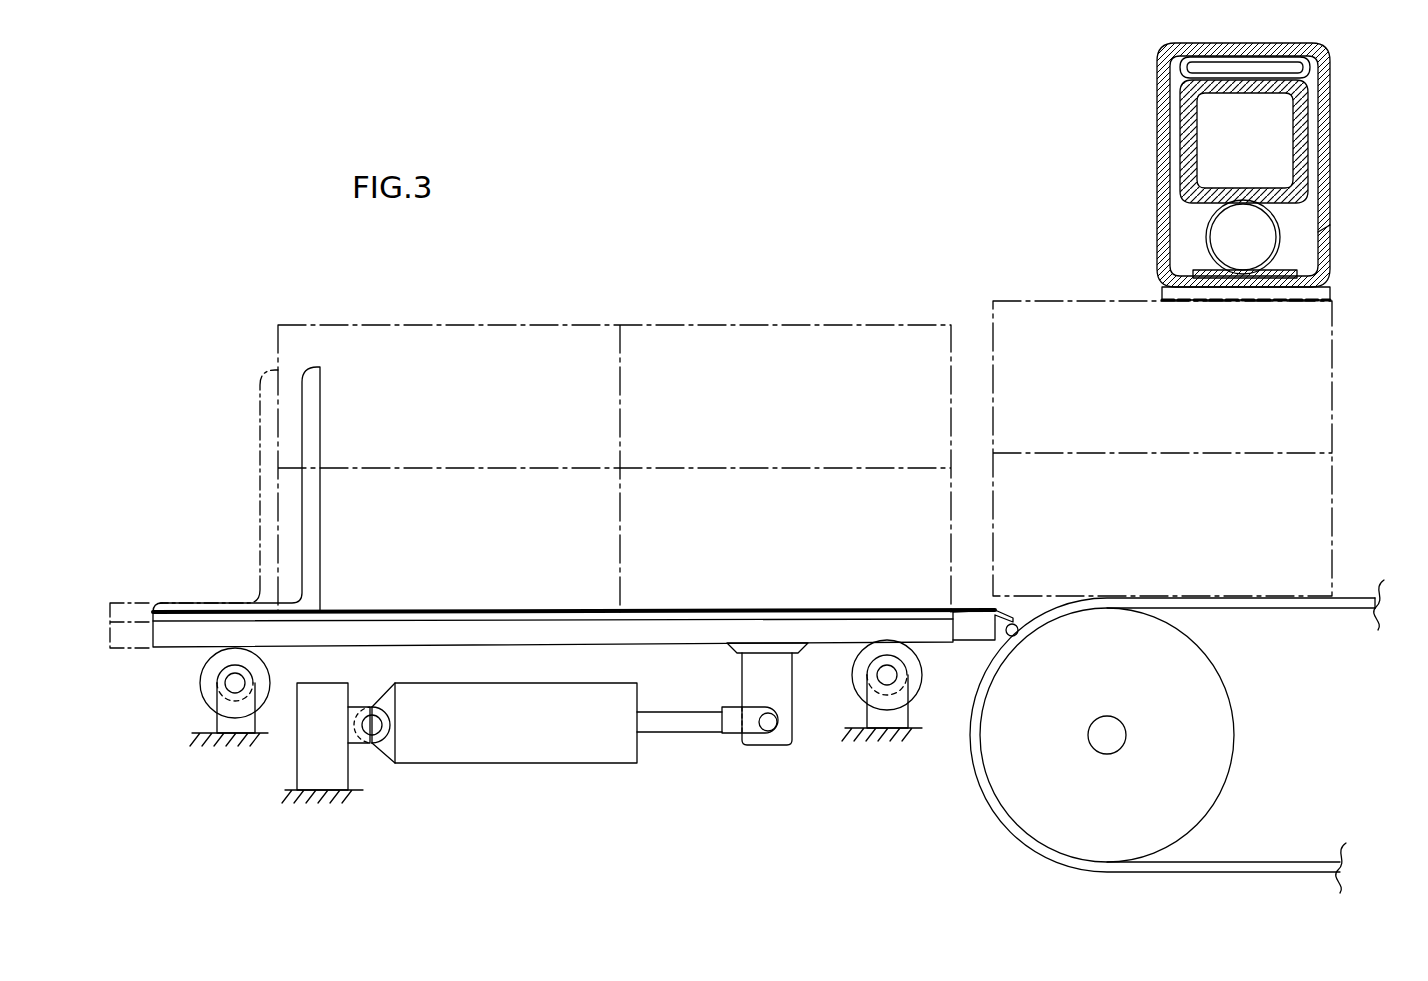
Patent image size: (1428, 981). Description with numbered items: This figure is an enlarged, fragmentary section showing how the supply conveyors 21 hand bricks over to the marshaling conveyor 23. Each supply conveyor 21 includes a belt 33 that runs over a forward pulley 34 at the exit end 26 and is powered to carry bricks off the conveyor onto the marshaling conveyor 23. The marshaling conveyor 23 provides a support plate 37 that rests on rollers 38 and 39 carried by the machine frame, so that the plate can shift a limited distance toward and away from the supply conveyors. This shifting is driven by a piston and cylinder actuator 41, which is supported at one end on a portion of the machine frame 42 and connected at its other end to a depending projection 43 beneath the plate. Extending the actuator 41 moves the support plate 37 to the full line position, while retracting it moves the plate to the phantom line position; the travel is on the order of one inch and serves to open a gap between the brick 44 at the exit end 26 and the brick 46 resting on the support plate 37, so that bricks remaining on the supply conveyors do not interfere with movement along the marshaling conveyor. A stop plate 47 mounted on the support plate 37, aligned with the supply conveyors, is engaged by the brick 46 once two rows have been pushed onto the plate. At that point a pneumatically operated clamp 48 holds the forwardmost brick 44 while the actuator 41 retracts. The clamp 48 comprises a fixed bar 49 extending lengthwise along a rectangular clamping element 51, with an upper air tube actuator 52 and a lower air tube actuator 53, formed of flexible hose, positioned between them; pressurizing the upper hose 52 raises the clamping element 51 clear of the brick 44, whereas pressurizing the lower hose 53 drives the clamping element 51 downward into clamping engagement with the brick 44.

The supply conveyor 21 is at (1360, 588).
The marshaling conveyor 23 is at (790, 607).
The exit end 26 is at (1015, 637).
The belt 33 is at (1340, 603).
The forward pulley 34 is at (1218, 698).
The support plate 37 is at (712, 612).
The roller 38 is at (857, 675).
The roller 39 is at (268, 667).
The piston and cylinder actuator 41 is at (573, 752).
The machine frame portion 42 is at (340, 767).
The depending projection 43 is at (780, 736).
The brick 44 is at (1045, 301).
The brick 46 is at (885, 323).
The stop plate 47 is at (318, 522).
The pneumatically operated clamp 48 is at (1333, 176).
The fixed bar 49 is at (1300, 183).
The clamping element 51 is at (1330, 230).
The upper air tube actuator 52 is at (1185, 68).
The lower air tube actuator 53 is at (1205, 249).